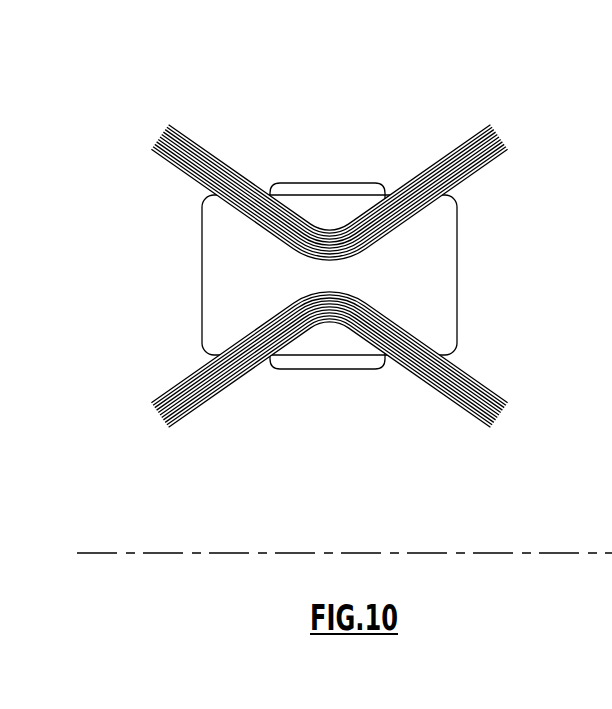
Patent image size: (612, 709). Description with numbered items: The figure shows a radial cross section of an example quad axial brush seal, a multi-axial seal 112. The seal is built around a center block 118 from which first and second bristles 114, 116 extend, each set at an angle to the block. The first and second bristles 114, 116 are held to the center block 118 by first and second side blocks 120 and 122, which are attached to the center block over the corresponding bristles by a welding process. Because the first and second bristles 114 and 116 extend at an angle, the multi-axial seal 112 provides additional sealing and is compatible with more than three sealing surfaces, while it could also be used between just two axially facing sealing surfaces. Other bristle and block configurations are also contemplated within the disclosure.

The multi-axial seal 112 is at (516, 58).
The first bristles 114 is at (465, 173).
The second bristles 116 is at (462, 380).
The center block 118 is at (427, 277).
The first side block 120 is at (352, 200).
The second side block 122 is at (353, 352).